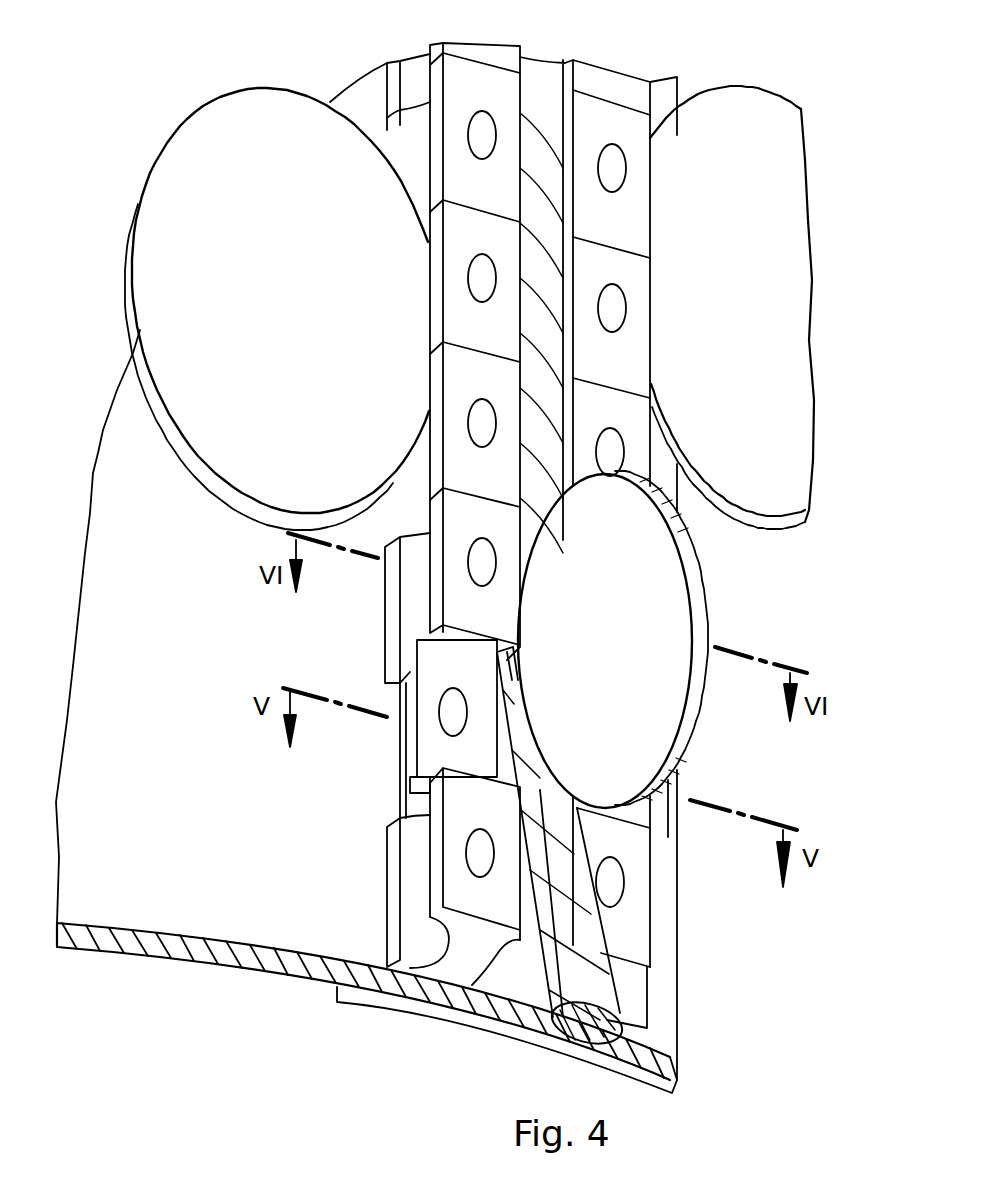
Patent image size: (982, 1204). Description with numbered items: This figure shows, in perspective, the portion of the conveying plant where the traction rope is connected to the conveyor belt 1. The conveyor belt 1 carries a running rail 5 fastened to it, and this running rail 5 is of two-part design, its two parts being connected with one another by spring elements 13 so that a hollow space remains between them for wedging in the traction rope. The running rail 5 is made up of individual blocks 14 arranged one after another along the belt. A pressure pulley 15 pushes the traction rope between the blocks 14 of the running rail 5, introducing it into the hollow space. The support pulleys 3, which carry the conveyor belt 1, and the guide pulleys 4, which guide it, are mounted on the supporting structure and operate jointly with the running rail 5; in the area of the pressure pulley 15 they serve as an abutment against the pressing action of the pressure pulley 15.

The conveyor belt 1 is at (287, 970).
The spring elements 13 is at (387, 1005).
The support pulleys 3 is at (240, 370).
The guide pulleys 4 is at (722, 352).
The pressure pulley 15 is at (614, 622).
The running rail 5 is at (430, 258).
The blocks 14 is at (440, 668).